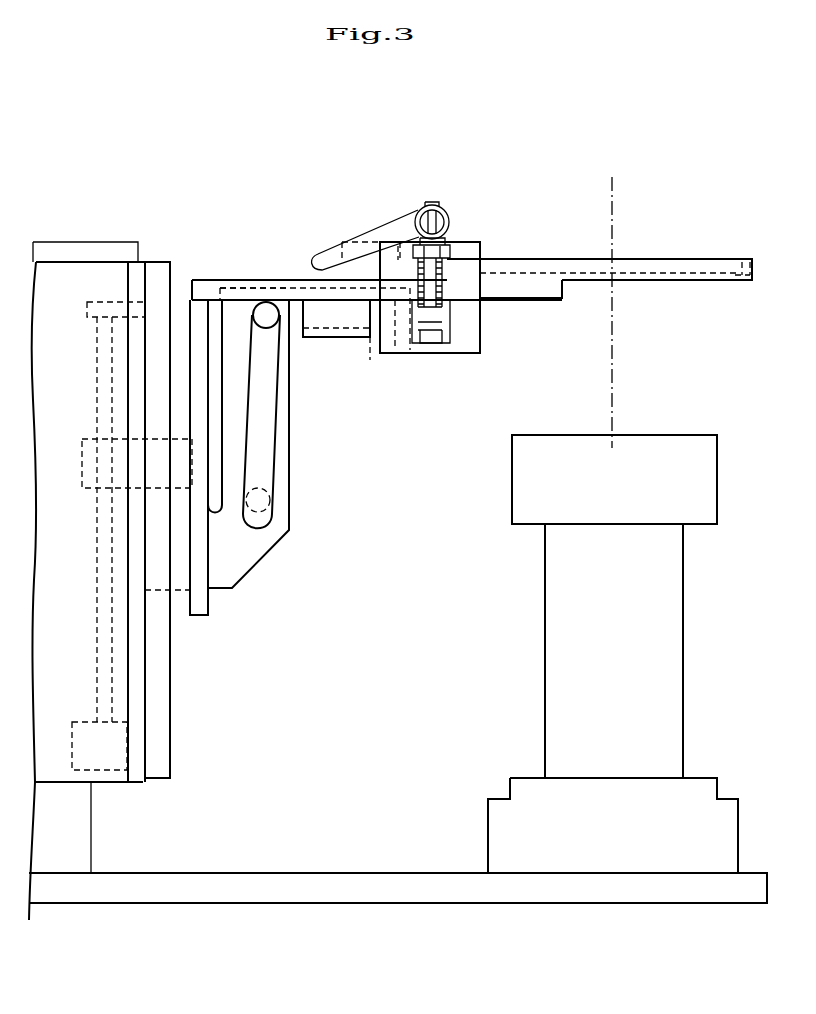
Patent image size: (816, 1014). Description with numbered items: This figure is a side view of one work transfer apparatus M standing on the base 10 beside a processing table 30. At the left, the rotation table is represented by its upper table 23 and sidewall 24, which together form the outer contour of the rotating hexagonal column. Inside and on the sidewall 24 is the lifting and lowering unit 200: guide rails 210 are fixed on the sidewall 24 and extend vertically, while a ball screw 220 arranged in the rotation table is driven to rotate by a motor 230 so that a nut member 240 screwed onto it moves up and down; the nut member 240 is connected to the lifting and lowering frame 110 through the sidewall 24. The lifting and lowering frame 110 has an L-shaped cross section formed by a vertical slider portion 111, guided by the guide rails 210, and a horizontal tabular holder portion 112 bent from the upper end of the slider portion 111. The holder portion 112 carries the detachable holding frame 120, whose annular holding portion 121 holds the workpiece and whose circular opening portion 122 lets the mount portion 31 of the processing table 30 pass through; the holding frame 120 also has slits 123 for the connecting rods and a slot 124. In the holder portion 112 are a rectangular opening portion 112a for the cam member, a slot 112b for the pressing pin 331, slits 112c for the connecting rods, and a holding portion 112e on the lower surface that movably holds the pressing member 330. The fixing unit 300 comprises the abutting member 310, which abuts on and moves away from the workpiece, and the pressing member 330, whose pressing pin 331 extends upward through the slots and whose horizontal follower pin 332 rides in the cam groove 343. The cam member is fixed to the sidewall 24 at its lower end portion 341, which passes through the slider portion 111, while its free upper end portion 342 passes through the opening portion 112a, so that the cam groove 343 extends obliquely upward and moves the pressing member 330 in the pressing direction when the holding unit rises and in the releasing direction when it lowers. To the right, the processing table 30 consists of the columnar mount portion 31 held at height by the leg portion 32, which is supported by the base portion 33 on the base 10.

The base 10 is at (346, 905).
The lifting and lowering unit 200 is at (82, 355).
The upper table 23 is at (62, 246).
The sidewall 24 is at (140, 277).
The guide rails 210 is at (165, 760).
The ball screw 220 is at (97, 540).
The motor 230 is at (82, 722).
The nut member 240 is at (97, 439).
The lifting and lowering frame 110 is at (302, 278).
The slider portion 111 is at (200, 612).
The holder portion 112 is at (522, 290).
The opening portion 112a is at (215, 288).
The slot 112b is at (400, 336).
The slits 112c is at (435, 330).
The holding portion 112e is at (340, 340).
The holding frame 120 is at (512, 259).
The holding portion 121 is at (745, 262).
The opening portion 122 is at (735, 282).
The slits 123 is at (450, 258).
The slot 124 is at (370, 257).
The abutting member 310 is at (456, 240).
The pressing pin 331 is at (392, 255).
The work transfer apparatus M is at (333, 203).
The fixing unit 300 is at (302, 410).
The pressing member 330 is at (357, 338).
The follower pin 332 is at (266, 312).
The lower end portion 341 is at (156, 592).
The upper end portion 342 is at (238, 285).
The cam groove 343 is at (280, 432).
The mount portion 31 is at (522, 507).
The leg portion 32 is at (552, 612).
The base portion 33 is at (497, 828).
The processing table 30 is at (520, 672).